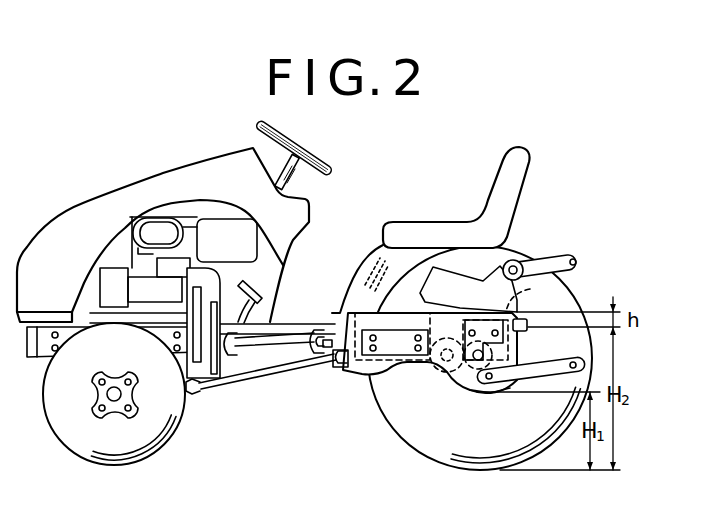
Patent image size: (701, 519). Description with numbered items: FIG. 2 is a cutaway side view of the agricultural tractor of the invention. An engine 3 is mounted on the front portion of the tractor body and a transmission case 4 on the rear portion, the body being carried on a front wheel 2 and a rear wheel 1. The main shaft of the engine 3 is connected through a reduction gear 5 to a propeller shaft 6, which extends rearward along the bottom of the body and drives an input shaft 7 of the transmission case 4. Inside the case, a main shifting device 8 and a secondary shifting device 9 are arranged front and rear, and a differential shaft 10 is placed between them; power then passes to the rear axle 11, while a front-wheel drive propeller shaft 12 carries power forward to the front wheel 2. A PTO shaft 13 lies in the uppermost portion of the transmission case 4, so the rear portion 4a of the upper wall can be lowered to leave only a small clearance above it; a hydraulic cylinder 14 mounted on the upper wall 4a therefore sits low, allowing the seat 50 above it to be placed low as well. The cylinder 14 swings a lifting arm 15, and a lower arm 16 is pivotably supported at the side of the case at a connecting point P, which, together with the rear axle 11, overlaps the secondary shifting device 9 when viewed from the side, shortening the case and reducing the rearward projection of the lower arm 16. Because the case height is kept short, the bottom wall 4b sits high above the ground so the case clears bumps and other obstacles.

The rear wheel 1 is at (430, 445).
The front wheel 2 is at (133, 462).
The engine 3 is at (157, 287).
The transmission case 4 is at (362, 372).
The rear portion of upper wall 4a is at (478, 310).
The bottom wall 4b is at (497, 392).
The reduction gear 5 is at (210, 392).
The propeller shaft 6 is at (292, 347).
The input shaft 7 is at (325, 328).
The main shifting device 8 is at (357, 303).
The secondary shifting device 9 is at (524, 297).
The differential shaft 10 is at (437, 373).
The rear axle 11 is at (477, 363).
The front-wheel drive propeller shaft 12 is at (264, 376).
The PTO shaft 13 is at (524, 332).
The hydraulic cylinder 14 is at (493, 275).
The lifting arm 15 is at (552, 258).
The lower arm 16 is at (539, 382).
The seat 50 is at (433, 230).
The connecting point P is at (488, 382).